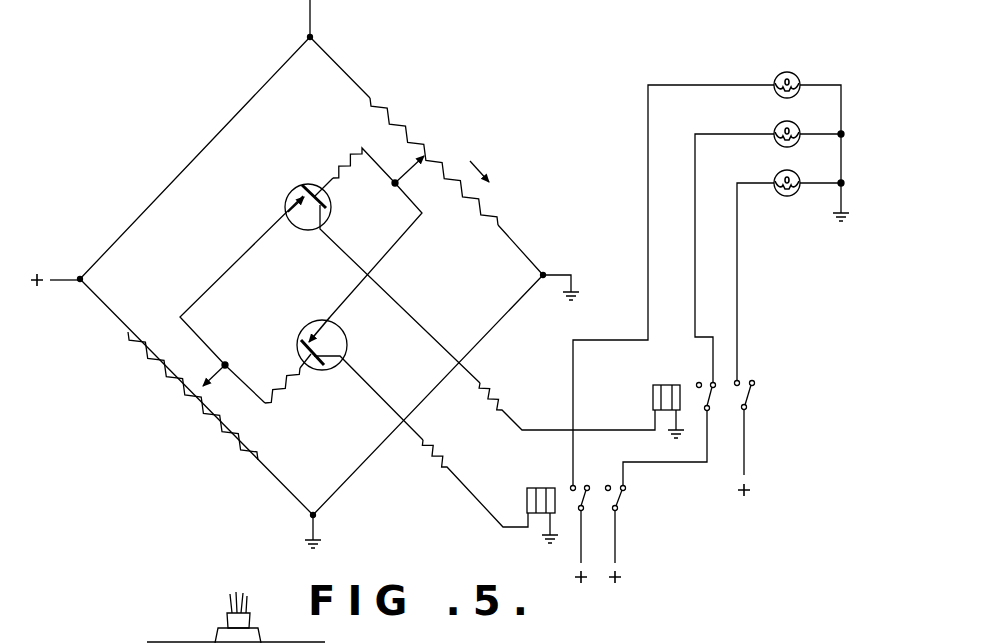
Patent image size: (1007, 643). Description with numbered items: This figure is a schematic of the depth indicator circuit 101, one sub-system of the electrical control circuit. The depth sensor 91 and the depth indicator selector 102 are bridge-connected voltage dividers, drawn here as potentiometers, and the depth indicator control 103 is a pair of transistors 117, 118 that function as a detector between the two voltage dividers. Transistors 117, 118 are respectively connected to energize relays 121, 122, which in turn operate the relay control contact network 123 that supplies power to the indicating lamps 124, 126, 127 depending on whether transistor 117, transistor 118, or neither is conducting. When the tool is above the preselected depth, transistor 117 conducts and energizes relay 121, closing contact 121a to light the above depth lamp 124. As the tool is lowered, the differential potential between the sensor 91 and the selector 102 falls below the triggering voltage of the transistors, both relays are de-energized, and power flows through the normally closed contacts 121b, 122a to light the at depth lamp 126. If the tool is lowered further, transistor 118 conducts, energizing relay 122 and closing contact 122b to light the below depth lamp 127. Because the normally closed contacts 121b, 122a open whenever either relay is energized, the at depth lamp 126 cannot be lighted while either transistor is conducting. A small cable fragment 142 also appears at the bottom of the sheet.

The depth indicator circuit 101 is at (195, 124).
The depth indicator selector 102 is at (182, 356).
The depth indicator control 103 is at (249, 217).
The depth sensor 91 is at (434, 199).
The transistor 117 is at (315, 321).
The transistor 118 is at (310, 184).
The relay 121 is at (528, 491).
The contact 121a is at (571, 490).
The normally closed contact 121b is at (624, 499).
The relay 122 is at (652, 390).
The normally closed contact 122a is at (704, 380).
The contact 122b is at (748, 379).
The relay control contact network 123 is at (770, 411).
The above depth lamp 124 is at (798, 77).
The at depth lamp 126 is at (797, 126).
The below depth lamp 127 is at (797, 176).
The cable 142 is at (230, 597).